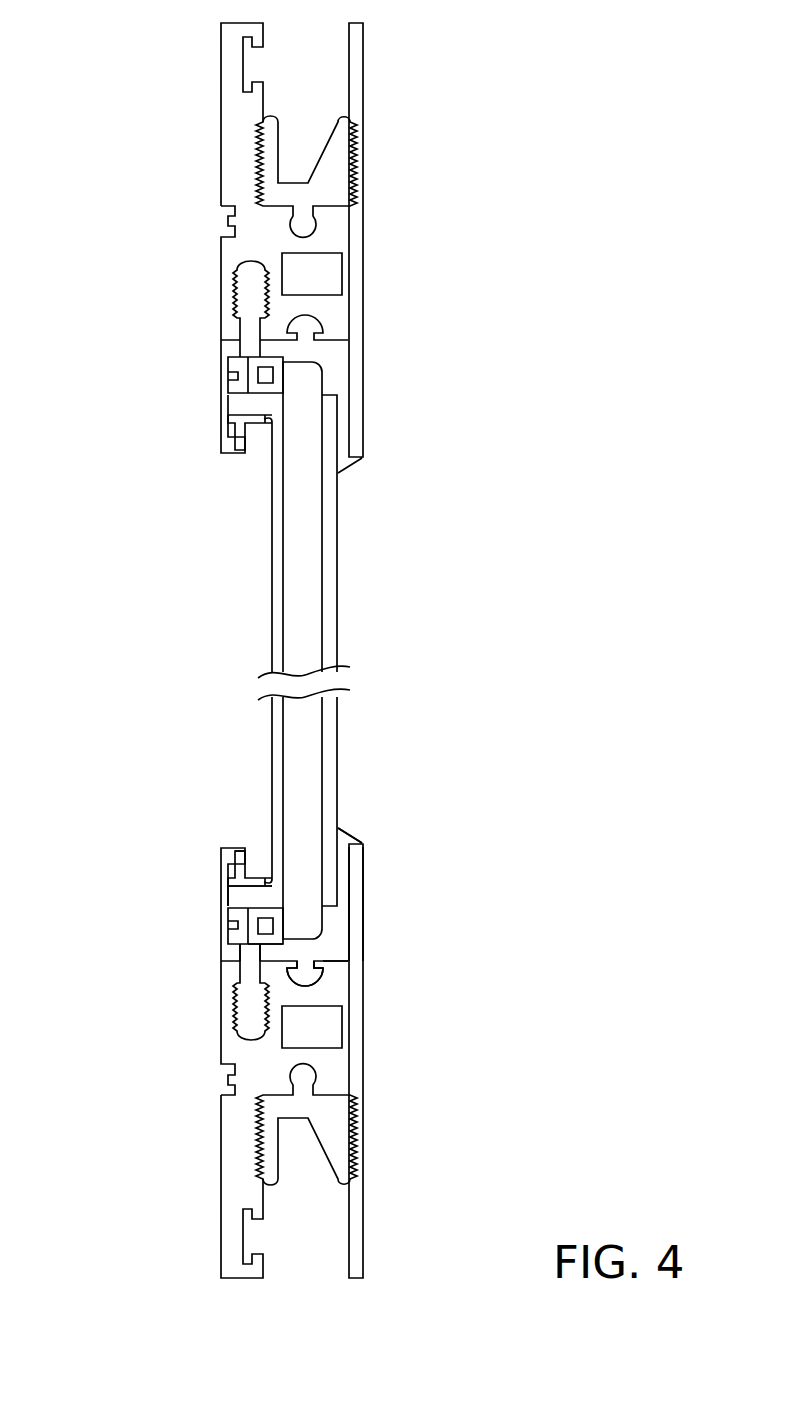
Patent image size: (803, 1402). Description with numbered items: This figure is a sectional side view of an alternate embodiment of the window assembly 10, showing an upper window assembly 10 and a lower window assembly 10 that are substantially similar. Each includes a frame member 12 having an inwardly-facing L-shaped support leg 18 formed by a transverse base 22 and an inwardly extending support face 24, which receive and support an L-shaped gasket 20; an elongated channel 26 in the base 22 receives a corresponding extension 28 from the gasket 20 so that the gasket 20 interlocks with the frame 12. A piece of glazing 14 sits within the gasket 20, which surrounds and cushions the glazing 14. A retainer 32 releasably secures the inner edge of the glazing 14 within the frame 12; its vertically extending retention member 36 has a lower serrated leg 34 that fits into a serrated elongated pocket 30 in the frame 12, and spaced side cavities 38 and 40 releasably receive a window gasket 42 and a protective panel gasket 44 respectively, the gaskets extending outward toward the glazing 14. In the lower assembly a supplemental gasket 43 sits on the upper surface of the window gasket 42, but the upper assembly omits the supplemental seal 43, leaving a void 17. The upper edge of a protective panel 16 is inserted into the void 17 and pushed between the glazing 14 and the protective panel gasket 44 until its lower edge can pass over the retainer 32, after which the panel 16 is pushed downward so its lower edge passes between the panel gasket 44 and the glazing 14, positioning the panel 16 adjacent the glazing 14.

The window assembly 10 is at (374, 650).
The frame 12 is at (368, 152).
The glazing 14 is at (333, 793).
The protective panel 16 is at (265, 729).
The void 17 is at (247, 415).
The support leg 18 is at (370, 917).
The gasket 20 is at (353, 899).
The base 22 is at (335, 963).
The support face 24 is at (357, 873).
The channel 26 is at (318, 975).
The extension 28 is at (300, 985).
The pocket 30 is at (245, 1003).
The retainer 32 is at (150, 634).
The leg 34 is at (240, 990).
The retention member 36 is at (228, 858).
The side cavity 38 is at (228, 942).
The side cavity 40 is at (240, 848).
The window gasket 42 is at (240, 378).
The supplemental gasket 43 is at (228, 890).
The protective panel gasket 44 is at (258, 440).